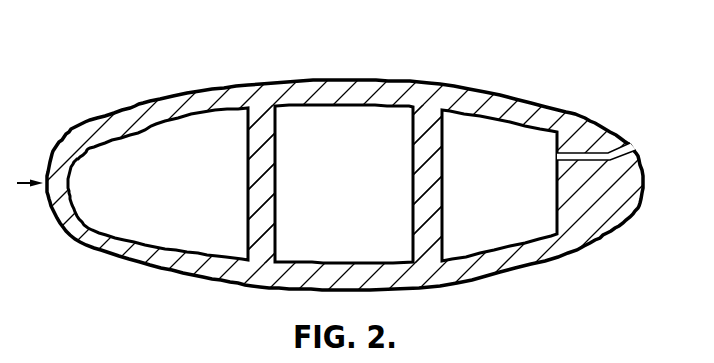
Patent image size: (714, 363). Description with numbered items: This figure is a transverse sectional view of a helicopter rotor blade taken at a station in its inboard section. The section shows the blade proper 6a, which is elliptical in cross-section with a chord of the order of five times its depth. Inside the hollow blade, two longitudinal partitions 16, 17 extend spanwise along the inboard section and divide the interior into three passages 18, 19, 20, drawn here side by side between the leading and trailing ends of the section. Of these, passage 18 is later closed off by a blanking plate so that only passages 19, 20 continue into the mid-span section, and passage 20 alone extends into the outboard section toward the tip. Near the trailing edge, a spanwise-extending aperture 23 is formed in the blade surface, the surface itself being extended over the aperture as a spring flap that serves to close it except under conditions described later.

The blade proper 6a is at (338, 85).
The longitudinal partition 16 is at (257, 138).
The longitudinal partition 17 is at (433, 145).
The passage 18 is at (507, 202).
The passage 19 is at (362, 202).
The passage 20 is at (156, 199).
The spanwise-extending aperture 23 is at (622, 147).